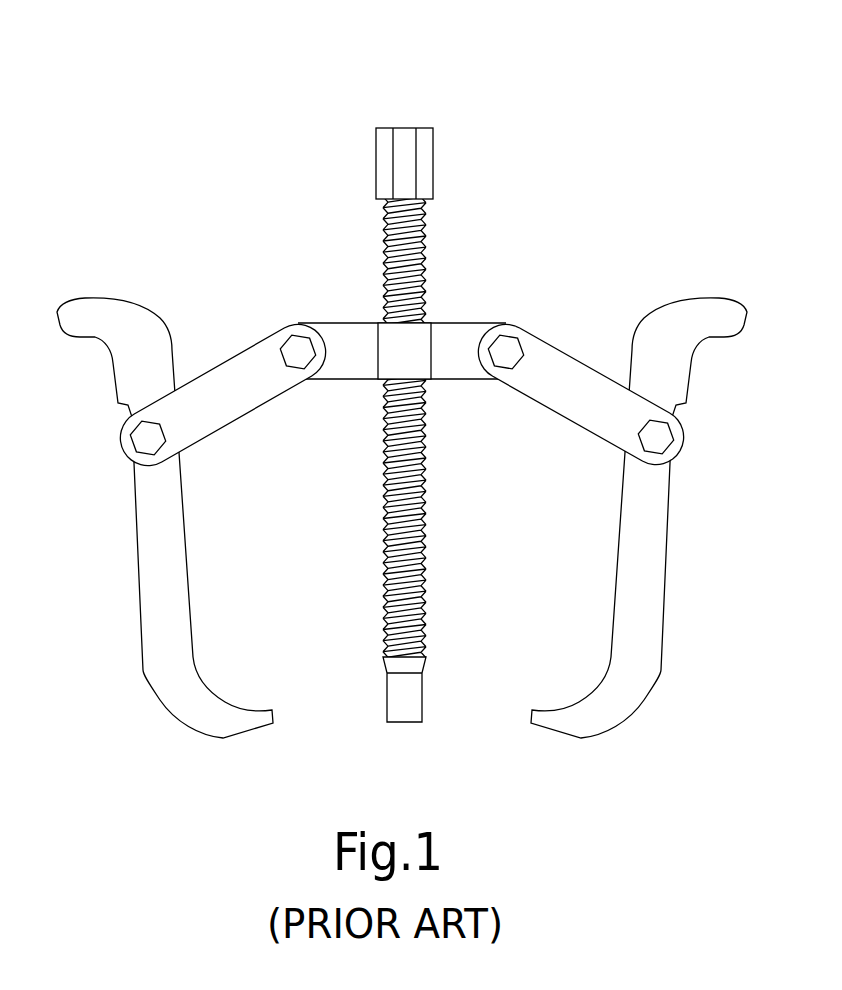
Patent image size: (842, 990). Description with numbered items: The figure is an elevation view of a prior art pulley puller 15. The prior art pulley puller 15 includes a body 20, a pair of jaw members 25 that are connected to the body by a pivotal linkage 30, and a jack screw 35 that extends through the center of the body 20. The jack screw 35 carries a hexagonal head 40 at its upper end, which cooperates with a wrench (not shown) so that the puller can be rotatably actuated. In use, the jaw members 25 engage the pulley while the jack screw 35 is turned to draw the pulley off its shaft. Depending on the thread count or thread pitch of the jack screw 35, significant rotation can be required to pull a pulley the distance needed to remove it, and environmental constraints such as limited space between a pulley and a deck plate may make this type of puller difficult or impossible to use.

The prior art pulley puller 15 is at (402, 374).
The body 20 is at (468, 323).
The jaw members 25 is at (122, 300).
The pivotal linkage 30 is at (227, 362).
The jack screw 35 is at (427, 247).
The hexagonal head 40 is at (425, 127).